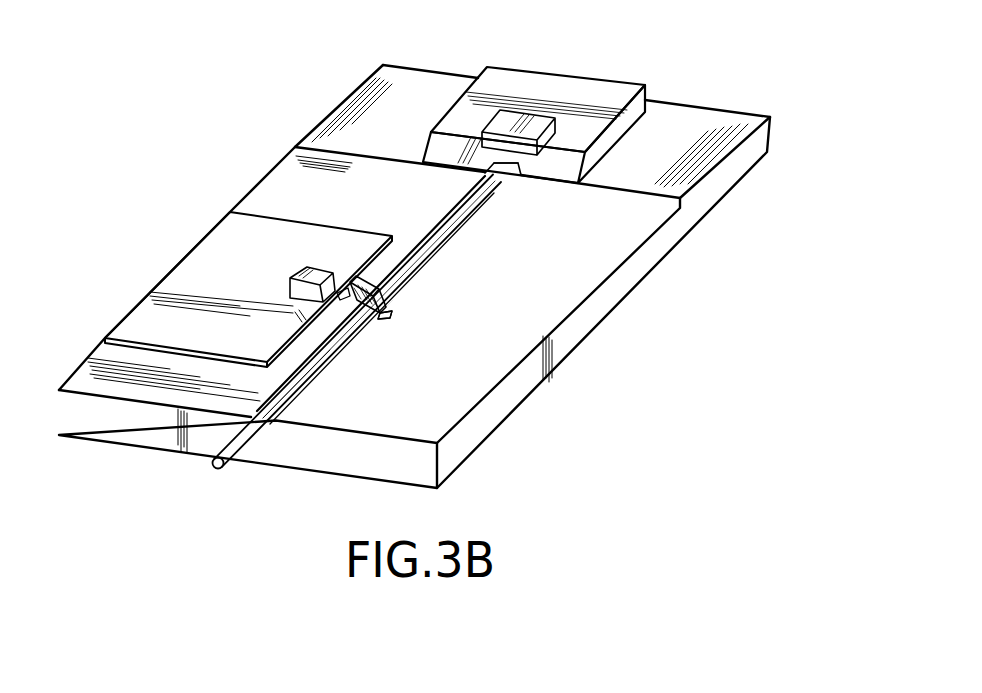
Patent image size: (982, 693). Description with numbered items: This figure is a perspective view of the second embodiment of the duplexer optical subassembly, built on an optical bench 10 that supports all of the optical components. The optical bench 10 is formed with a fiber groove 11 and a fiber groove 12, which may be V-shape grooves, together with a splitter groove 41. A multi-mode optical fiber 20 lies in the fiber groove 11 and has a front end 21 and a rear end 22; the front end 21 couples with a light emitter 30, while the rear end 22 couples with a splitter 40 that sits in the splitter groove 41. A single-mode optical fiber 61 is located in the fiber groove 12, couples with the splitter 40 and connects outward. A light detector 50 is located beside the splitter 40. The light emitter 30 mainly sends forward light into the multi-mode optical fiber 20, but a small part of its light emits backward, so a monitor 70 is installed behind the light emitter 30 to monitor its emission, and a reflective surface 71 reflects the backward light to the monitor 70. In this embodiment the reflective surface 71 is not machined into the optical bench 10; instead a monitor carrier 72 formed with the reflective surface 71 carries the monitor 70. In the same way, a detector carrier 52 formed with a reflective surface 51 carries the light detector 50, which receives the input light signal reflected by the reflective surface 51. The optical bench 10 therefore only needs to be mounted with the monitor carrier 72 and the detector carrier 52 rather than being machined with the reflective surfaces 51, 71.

The optical bench 10 is at (593, 317).
The fiber groove 11 is at (430, 250).
The fiber groove 12 is at (268, 423).
The multi-mode optical fiber 20 is at (437, 227).
The front end 21 is at (500, 180).
The rear end 22 is at (393, 297).
The light emitter 30 is at (487, 165).
The splitter 40 is at (358, 278).
The splitter groove 41 is at (385, 318).
The light detector 50 is at (313, 268).
The reflective surface 51 is at (267, 352).
The detector carrier 52 is at (165, 313).
The single-mode optical fiber 61 is at (310, 373).
The monitor 70 is at (517, 120).
The reflective surface 71 is at (560, 165).
The monitor carrier 72 is at (593, 102).